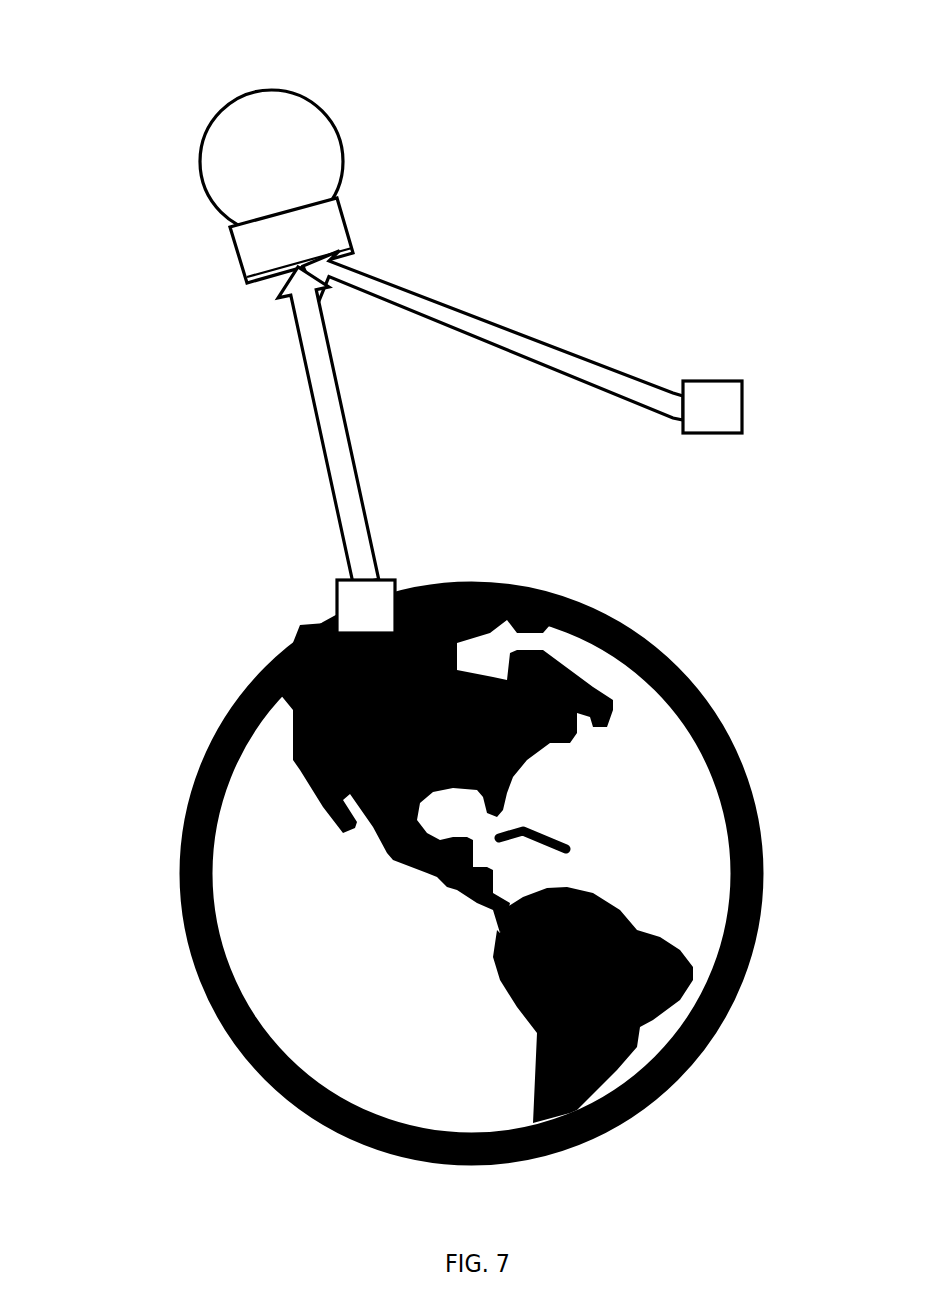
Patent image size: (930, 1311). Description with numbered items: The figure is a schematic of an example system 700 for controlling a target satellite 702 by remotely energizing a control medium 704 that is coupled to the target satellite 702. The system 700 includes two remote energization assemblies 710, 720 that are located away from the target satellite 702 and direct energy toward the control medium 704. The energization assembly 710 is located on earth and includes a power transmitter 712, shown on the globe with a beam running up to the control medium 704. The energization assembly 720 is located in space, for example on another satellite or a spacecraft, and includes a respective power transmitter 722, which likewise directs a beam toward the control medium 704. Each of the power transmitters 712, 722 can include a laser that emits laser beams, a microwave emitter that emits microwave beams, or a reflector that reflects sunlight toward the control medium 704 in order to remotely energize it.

The system 700 is at (192, 72).
The target satellite 702 is at (271, 161).
The control medium 704 is at (263, 253).
The remote energization assembly 710 is at (320, 598).
The power transmitter 712 is at (366, 606).
The remote energization assembly 720 is at (770, 386).
The power transmitter 722 is at (712, 407).